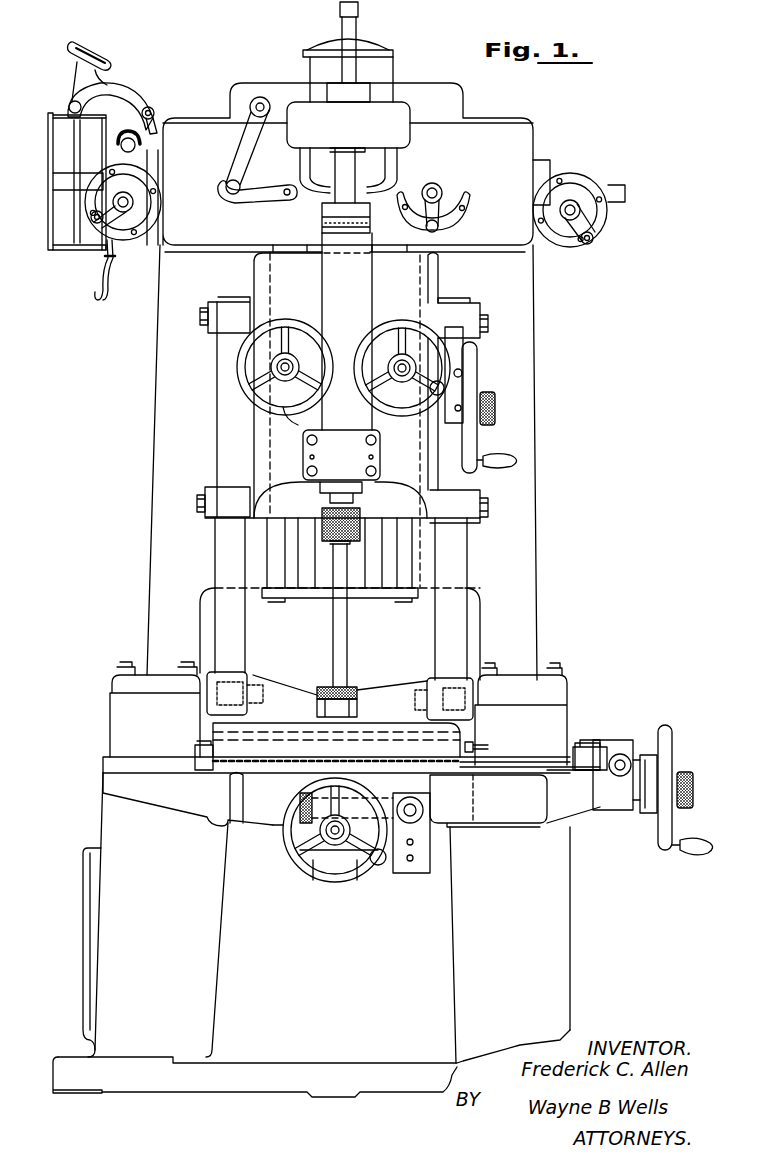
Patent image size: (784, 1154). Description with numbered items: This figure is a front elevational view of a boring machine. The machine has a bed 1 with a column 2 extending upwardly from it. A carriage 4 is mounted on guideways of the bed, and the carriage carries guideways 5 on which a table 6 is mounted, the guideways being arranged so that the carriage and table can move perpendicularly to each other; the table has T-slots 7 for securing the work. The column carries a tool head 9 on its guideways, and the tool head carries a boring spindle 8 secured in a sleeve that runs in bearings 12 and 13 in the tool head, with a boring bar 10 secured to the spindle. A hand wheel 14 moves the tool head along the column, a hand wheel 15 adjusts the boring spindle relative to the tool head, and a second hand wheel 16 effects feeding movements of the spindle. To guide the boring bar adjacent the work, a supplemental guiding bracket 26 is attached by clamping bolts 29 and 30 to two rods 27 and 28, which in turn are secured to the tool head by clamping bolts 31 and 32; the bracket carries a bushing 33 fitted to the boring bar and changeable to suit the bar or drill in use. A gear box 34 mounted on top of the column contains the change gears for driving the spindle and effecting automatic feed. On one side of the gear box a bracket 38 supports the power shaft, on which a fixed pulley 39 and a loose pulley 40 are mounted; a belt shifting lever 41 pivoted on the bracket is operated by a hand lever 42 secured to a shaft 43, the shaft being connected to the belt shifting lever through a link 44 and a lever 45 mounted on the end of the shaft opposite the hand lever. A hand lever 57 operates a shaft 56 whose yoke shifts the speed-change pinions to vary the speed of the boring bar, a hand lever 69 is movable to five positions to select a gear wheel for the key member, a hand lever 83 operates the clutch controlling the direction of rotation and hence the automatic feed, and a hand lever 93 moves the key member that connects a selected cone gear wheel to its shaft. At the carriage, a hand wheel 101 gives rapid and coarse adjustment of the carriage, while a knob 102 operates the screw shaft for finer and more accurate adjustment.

The bed 1 is at (410, 1048).
The column 2 is at (527, 615).
The carriage 4 is at (200, 808).
The guideways 5 is at (144, 758).
The table 6 is at (205, 745).
The T-slots 7 is at (462, 745).
The boring spindle 8 is at (335, 192).
The tool head 9 is at (258, 440).
The boring bar 10 is at (337, 630).
The bearing 12 is at (338, 330).
The bearing 13 is at (335, 436).
The hand wheel 14 is at (240, 386).
The hand wheel 15 is at (470, 385).
The second hand wheel 16 is at (408, 412).
The supplemental supporting or guiding bracket 26 is at (393, 697).
The rod 27 is at (237, 640).
The rod 28 is at (437, 640).
The clamping bolt 29 is at (258, 692).
The clamping bolt 30 is at (417, 697).
The clamping bolt 31 is at (206, 304).
The clamping bolt 32 is at (490, 318).
The bushing 33 is at (357, 690).
The gear box 34 is at (522, 154).
The bracket 38 is at (117, 96).
The pulley 39 is at (58, 246).
The pulley 40 is at (88, 246).
The belt shifting lever 41 is at (104, 58).
The hand lever 42 is at (108, 300).
The shaft 43 is at (136, 145).
The link 44 is at (150, 106).
The lever 45 is at (152, 130).
The shaft 56 is at (260, 97).
The hand lever 57 is at (230, 184).
The hand lever 69 is at (115, 232).
The hand lever 83 is at (447, 198).
The hand lever 93 is at (596, 232).
The hand wheel 101 is at (370, 882).
The knob 102 is at (335, 846).